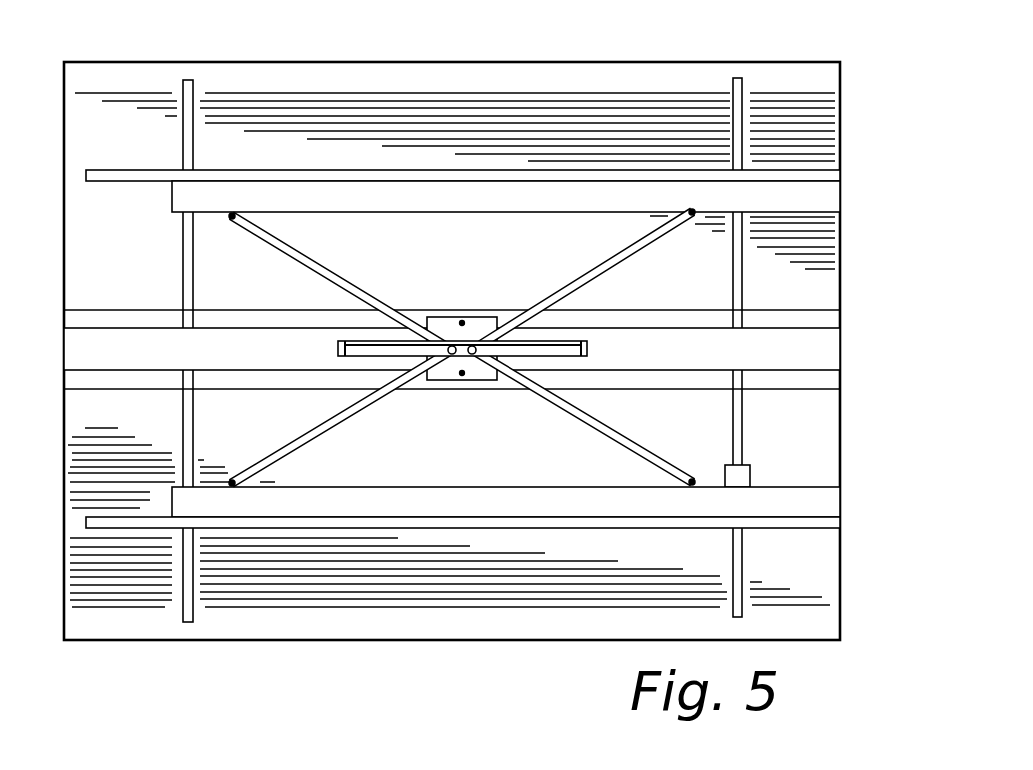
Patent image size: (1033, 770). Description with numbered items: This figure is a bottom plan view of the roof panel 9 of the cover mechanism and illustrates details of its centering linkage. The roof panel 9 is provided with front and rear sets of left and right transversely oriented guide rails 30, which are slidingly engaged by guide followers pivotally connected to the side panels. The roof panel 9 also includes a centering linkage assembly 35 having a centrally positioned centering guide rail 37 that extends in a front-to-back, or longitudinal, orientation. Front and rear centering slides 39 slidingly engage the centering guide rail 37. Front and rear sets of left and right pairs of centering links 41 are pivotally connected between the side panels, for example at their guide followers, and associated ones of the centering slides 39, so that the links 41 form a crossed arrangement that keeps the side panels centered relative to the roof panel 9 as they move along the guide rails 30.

The roof panel 9 is at (833, 430).
The guide rail 30 is at (743, 85).
The centering linkage assembly 35 is at (475, 348).
The centering guide rail 37 is at (336, 347).
The centering slide 39 is at (452, 357).
The centering link 41 is at (365, 290).